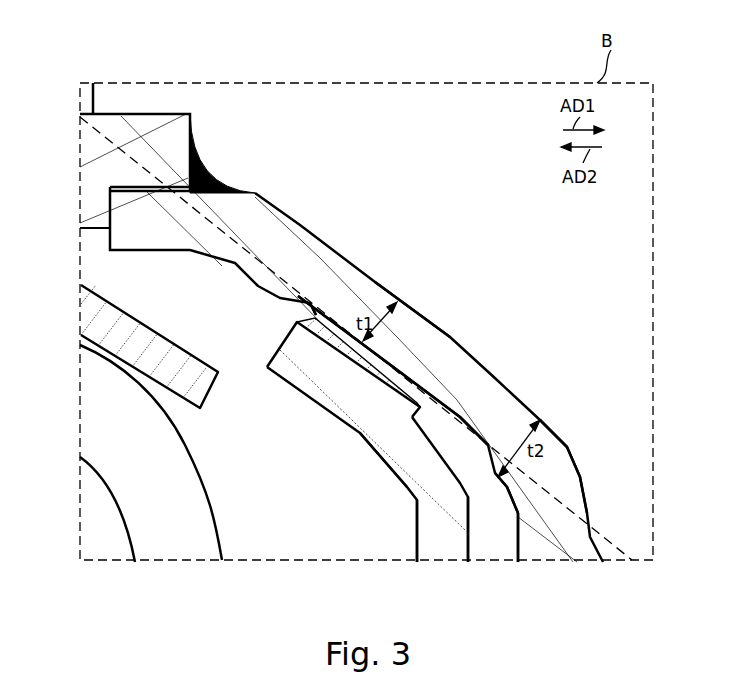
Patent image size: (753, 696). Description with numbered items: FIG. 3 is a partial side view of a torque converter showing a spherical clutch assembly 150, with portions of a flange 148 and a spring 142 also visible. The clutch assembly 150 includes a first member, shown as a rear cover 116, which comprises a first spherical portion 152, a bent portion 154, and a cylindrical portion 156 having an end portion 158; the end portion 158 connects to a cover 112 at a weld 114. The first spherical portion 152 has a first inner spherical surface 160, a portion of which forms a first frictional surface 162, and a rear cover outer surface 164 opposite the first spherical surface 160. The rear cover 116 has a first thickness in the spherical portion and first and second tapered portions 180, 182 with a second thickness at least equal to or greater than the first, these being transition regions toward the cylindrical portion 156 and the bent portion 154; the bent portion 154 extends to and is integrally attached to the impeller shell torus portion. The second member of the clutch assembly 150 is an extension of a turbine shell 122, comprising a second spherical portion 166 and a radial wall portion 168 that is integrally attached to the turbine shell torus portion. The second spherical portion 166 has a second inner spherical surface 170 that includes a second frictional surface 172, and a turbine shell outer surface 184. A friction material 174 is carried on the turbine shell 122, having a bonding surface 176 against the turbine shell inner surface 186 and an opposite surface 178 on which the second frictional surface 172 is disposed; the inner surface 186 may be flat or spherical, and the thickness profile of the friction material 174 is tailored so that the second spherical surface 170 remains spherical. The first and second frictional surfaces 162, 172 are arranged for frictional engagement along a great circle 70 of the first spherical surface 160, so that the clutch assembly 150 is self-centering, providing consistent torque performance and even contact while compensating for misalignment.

The great circle 70 is at (603, 534).
The cover 112 is at (150, 112).
The weld 114 is at (212, 166).
The rear cover 116 is at (578, 451).
The turbine shell 122 is at (416, 534).
The spring 142 is at (103, 486).
The flange 148 is at (109, 363).
The clutch assembly 150 is at (658, 118).
The first spherical portion 152 is at (408, 334).
The bent portion 154 is at (557, 511).
The cylindrical portion 156 is at (191, 234).
The end portion 158 is at (104, 232).
The first spherical surface 160 is at (456, 416).
The first frictional surface 162 is at (391, 364).
The rear cover outer surface 164 is at (418, 308).
The second spherical portion 166 is at (361, 413).
The radial wall portion 168 is at (440, 528).
The second spherical surface 170 is at (401, 306).
The second frictional surface 172 is at (442, 376).
The friction material 174 is at (401, 446).
The bonding surface 176 is at (290, 384).
The opposite surface 178 is at (331, 306).
The first tapered portion 180 is at (276, 289).
The second tapered portion 182 is at (498, 479).
The turbine shell outer surface 184 is at (282, 375).
The turbine shell inner surface 186 is at (312, 309).